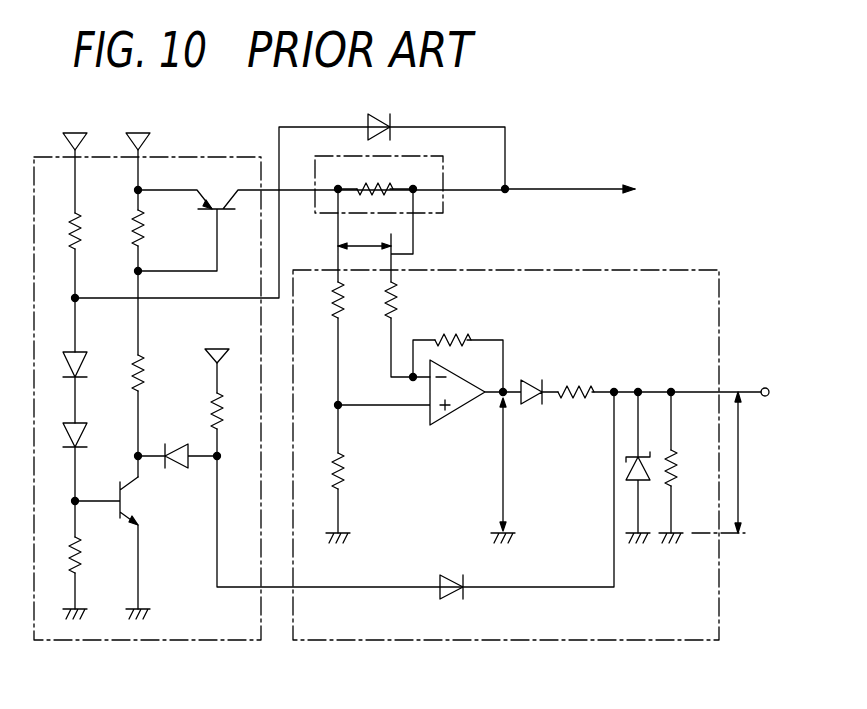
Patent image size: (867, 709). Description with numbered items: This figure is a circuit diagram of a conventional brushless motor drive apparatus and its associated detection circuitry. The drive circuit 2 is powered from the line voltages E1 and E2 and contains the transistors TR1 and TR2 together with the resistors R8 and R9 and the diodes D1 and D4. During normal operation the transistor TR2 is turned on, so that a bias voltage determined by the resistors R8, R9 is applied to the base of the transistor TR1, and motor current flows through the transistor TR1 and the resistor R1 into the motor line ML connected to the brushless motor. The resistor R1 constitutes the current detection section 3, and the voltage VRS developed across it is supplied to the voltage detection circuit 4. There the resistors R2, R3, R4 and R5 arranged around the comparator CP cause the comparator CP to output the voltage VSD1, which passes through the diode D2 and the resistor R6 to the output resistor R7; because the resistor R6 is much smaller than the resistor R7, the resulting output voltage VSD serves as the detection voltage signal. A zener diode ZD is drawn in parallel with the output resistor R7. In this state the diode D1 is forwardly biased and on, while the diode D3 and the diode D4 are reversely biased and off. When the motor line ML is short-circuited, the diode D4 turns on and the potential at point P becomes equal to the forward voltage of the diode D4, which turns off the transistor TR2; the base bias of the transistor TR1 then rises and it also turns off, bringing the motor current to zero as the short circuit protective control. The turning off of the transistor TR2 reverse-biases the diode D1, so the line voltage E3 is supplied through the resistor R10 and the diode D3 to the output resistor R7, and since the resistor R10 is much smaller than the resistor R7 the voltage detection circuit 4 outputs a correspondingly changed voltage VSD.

The drive circuit 2 is at (213, 640).
The current detection section 3 is at (443, 162).
The voltage detection circuit 4 is at (388, 640).
The line voltage E1 is at (75, 361).
The line voltage E2 is at (138, 290).
The line voltage E3 is at (409, 453).
The point P is at (278, 219).
The transistor TR1 is at (320, 217).
The transistor TR2 is at (124, 548).
The resistor R1 is at (422, 219).
The resistor R2 is at (324, 367).
The resistor R3 is at (407, 329).
The resistor R4 is at (328, 498).
The resistor R5 is at (458, 350).
The resistor R6 is at (663, 375).
The output resistor R7 is at (682, 466).
The resistor R8 is at (151, 228).
The resistor R9 is at (151, 373).
The resistor R10 is at (198, 409).
The diode D1 is at (178, 443).
The diode D2 is at (530, 378).
The diode D3 is at (449, 572).
The diode D4 is at (379, 113).
The comparator CP is at (453, 413).
The motor line ML is at (578, 190).
The voltage VRS is at (364, 233).
The voltage VSD is at (723, 462).
The voltage VSD' VSD1 is at (506, 466).
The zener diode ZD is at (631, 466).